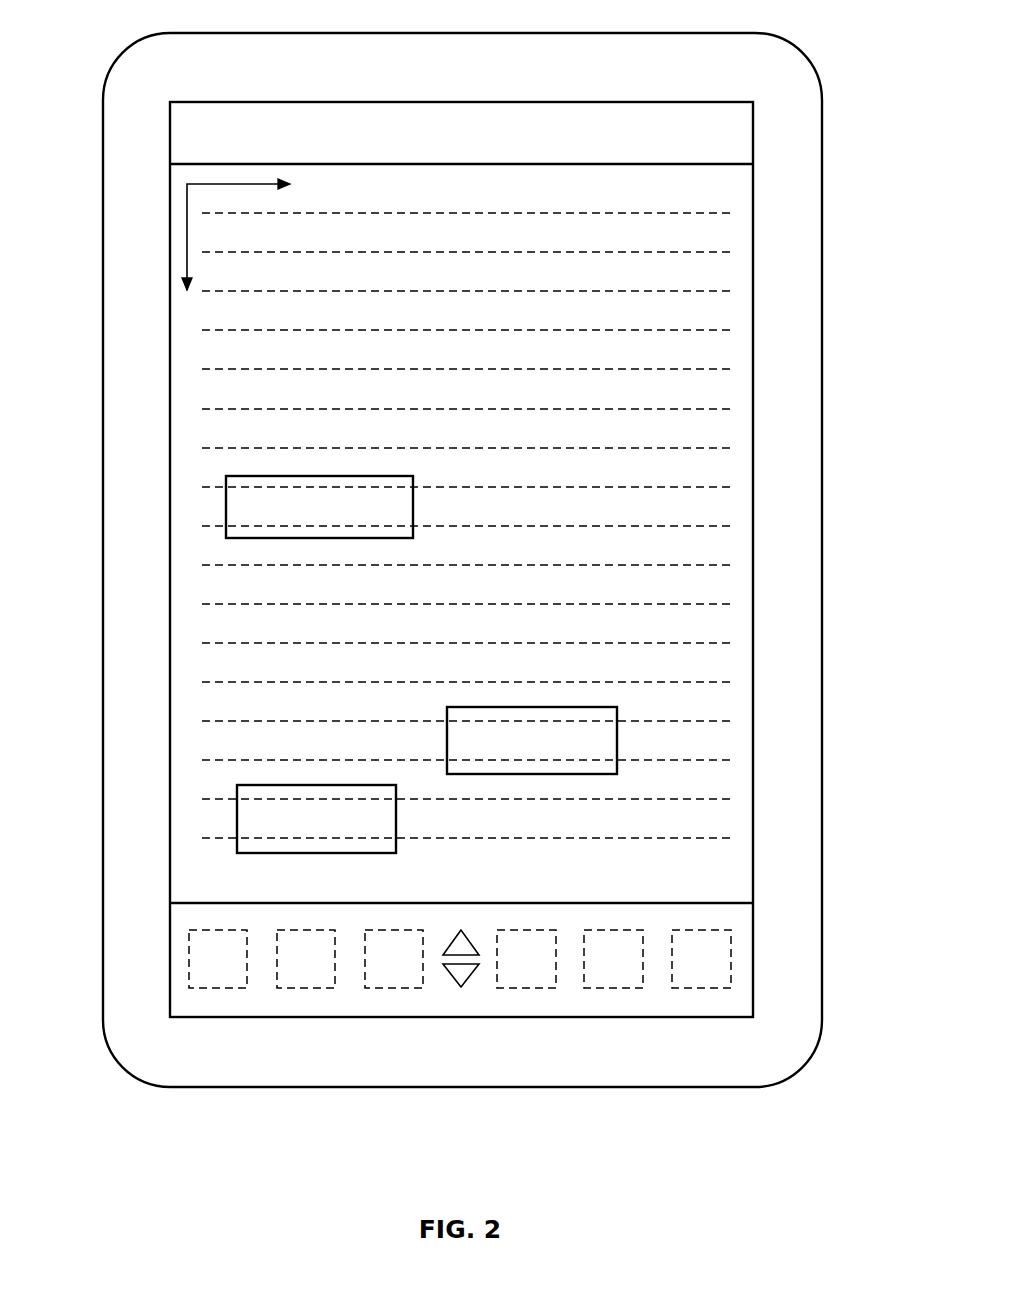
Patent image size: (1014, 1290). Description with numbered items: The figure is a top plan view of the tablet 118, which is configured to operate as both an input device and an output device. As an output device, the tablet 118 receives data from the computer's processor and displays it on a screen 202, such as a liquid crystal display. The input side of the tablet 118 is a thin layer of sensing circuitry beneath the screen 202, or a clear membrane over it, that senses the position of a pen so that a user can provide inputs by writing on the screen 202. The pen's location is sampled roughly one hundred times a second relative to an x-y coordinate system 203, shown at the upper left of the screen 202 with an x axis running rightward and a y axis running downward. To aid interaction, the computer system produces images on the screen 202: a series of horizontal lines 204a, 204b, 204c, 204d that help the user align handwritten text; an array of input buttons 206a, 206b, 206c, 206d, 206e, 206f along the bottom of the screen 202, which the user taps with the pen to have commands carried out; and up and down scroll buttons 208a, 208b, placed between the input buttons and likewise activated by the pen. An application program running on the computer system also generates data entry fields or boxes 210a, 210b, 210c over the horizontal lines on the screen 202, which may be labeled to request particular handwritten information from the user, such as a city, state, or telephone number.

The tablet 118 is at (168, 33).
The screen 202 is at (753, 385).
The x-y coordinate system 203 is at (240, 184).
The horizontal line 204a is at (706, 213).
The horizontal line 204b is at (228, 332).
The horizontal line 204c is at (705, 369).
The horizontal line 204d is at (706, 682).
The input button 206a is at (218, 988).
The input button 206b is at (306, 988).
The input button 206c is at (394, 988).
The input button 206d is at (526, 988).
The input button 206e is at (613, 988).
The input button 206f is at (701, 988).
The up scroll button 208a is at (466, 942).
The down scroll button 208b is at (448, 973).
The data entry field 210a is at (226, 505).
The data entry field 210b is at (617, 740).
The data entry field 210c is at (237, 818).